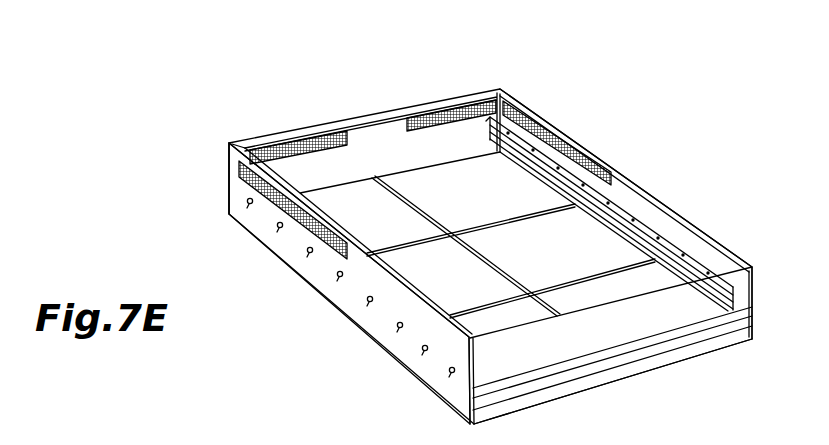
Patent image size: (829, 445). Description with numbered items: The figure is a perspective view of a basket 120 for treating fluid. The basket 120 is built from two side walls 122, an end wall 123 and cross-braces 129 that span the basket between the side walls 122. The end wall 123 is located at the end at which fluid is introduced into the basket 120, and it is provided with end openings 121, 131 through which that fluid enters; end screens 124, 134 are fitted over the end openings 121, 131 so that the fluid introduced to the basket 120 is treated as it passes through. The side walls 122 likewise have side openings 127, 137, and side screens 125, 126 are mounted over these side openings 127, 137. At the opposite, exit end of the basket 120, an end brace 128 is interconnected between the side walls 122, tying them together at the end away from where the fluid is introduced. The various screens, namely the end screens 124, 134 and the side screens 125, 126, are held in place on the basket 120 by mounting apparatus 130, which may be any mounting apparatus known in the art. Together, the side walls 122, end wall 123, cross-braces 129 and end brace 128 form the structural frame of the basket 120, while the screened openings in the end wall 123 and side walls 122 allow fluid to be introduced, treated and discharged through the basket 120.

The basket 120 is at (672, 190).
The end opening 121 is at (250, 142).
The side walls 122 is at (318, 270).
The end wall 123 is at (370, 143).
The end screen 124 is at (282, 143).
The side screen 125 is at (243, 182).
The side screen 126 is at (530, 121).
The side opening 127 is at (303, 233).
The end brace 128 is at (665, 345).
The cross-braces 129 is at (405, 197).
The mounting apparatus 130 is at (620, 210).
The end opening 131 is at (478, 102).
The end screen 134 is at (450, 116).
The side opening 137 is at (580, 148).